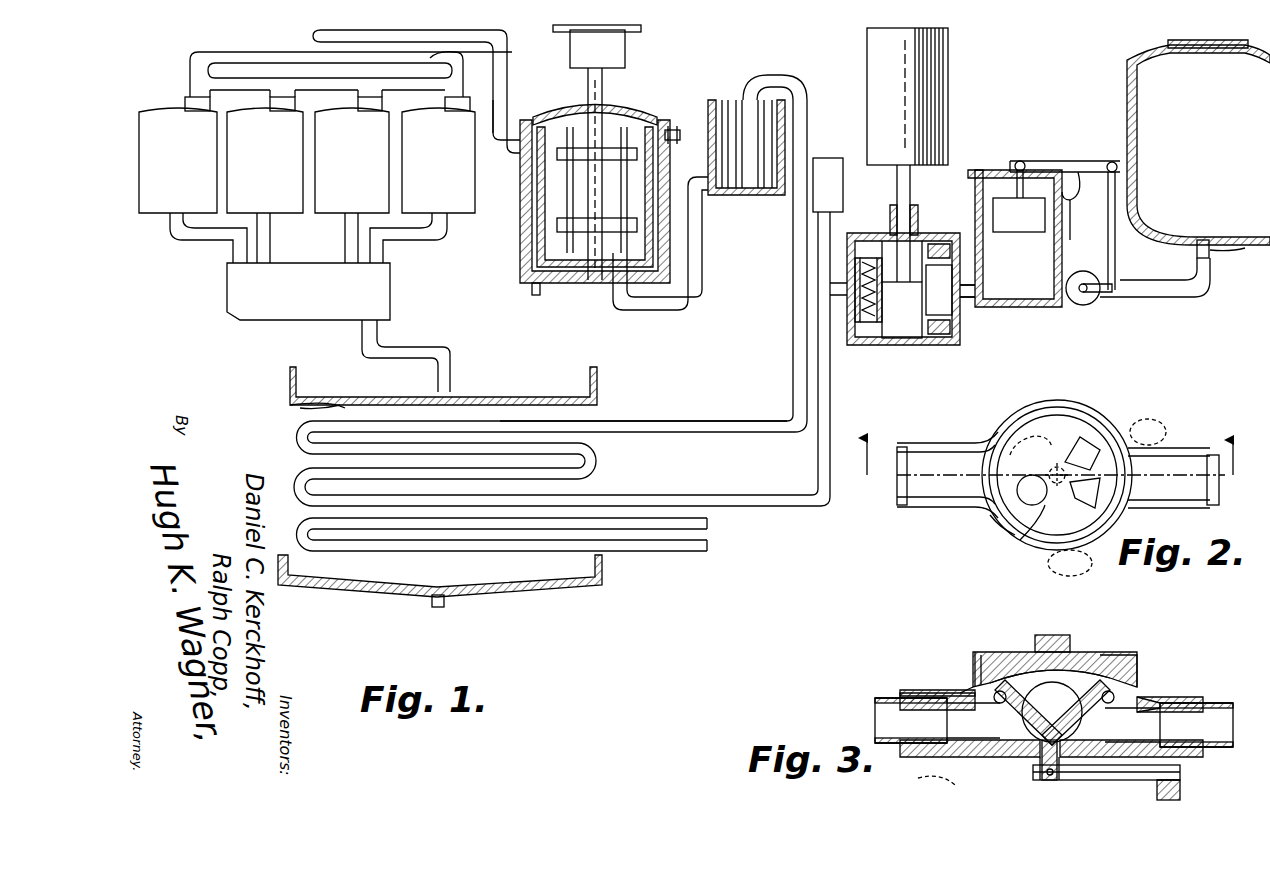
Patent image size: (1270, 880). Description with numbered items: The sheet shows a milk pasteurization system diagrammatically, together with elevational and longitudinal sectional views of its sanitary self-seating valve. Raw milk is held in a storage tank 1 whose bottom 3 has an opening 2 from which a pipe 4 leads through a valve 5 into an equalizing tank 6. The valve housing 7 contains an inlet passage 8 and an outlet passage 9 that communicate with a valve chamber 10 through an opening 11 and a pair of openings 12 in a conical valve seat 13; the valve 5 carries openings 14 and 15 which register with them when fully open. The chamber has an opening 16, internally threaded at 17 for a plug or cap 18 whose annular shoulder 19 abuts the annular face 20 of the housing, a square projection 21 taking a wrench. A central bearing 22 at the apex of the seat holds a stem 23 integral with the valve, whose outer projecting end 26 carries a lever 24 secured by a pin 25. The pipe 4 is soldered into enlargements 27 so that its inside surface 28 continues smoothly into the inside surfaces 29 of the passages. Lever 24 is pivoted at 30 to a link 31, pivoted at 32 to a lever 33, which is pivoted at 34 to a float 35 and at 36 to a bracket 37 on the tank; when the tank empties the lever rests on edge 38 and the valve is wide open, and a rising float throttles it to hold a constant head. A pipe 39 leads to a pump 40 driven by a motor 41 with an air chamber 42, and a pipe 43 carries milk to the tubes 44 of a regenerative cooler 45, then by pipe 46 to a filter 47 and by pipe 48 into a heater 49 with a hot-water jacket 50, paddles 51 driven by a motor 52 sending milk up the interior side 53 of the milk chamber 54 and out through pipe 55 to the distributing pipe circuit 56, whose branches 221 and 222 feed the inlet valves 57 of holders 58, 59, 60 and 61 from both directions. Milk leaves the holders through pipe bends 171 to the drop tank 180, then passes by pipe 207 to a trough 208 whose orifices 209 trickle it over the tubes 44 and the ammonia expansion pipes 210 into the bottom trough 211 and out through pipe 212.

In FIG. 1, the storage tank 1 is at (1130, 76).
In FIG. 1, the opening 2 is at (1205, 240).
In FIG. 1, the bottom 3 is at (1232, 248).
In FIG. 2, the bottom 3 is at (1061, 451).
In FIG. 1, the pipe 4 is at (1210, 278).
In FIG. 2, the pipe 4 is at (903, 447).
In FIG. 3, the pipe 4 is at (875, 702).
In FIG. 1, the valve 5 is at (1092, 300).
In FIG. 2, the valve 5 is at (1057, 497).
In FIG. 3, the valve 5 is at (1052, 712).
In FIG. 1, the equalizing tank 6 is at (975, 198).
In FIG. 2, the valve housing 7 is at (1005, 430).
In FIG. 3, the valve housing 7 is at (978, 680).
In FIG. 3, the inlet passage 8 is at (973, 720).
In FIG. 3, the outlet passage 9 is at (1132, 725).
In FIG. 3, the valve chamber 10 is at (1085, 660).
In FIG. 2, the inlet opening 11 is at (1031, 442).
In FIG. 3, the inlet opening 11 is at (1028, 712).
In FIG. 2, the outlet openings 12 is at (1107, 498).
In FIG. 3, the outlet openings 12 is at (1079, 712).
In FIG. 2, the valve seat 13 is at (1040, 540).
In FIG. 3, the valve seat 13 is at (995, 692).
In FIG. 2, the valve opening 14 is at (1030, 505).
In FIG. 3, the valve opening 14 is at (1050, 681).
In FIG. 2, the valve opening 15 is at (1080, 450).
In FIG. 3, the valve opening 15 is at (1102, 692).
In FIG. 3, the opening 16 is at (1150, 700).
In FIG. 2, the internal threads 17 is at (995, 528).
In FIG. 3, the internal threads 17 is at (1140, 685).
In FIG. 3, the plug or cap 18 is at (1010, 652).
In FIG. 3, the annular shoulder 19 is at (975, 655).
In FIG. 3, the annular face 20 is at (975, 680).
In FIG. 3, the square projection 21 is at (1052, 636).
In FIG. 3, the central bearing 22 is at (1040, 752).
In FIG. 3, the stem 23 is at (1040, 770).
In FIG. 3, the lever 24 is at (1130, 780).
In FIG. 3, the pin 25 is at (1050, 776).
In FIG. 3, the outer projecting end 26 is at (1030, 780).
In FIG. 3, the enlargements 27 is at (925, 692).
In FIG. 3, the inside surface 28 is at (911, 720).
In FIG. 3, the inside surfaces 29 is at (1196, 725).
In FIG. 1, the pivot 30 is at (1115, 292).
In FIG. 3, the pivot 30 is at (1182, 795).
In FIG. 1, the link 31 is at (1117, 268).
In FIG. 3, the link 31 is at (1185, 782).
In FIG. 1, the pivot 32 is at (1110, 160).
In FIG. 1, the lever 33 is at (1058, 160).
In FIG. 1, the pivot 34 is at (1020, 160).
In FIG. 1, the float 35 is at (1019, 215).
In FIG. 1, the pivot 36 is at (1082, 195).
In FIG. 1, the bracket 37 is at (1071, 220).
In FIG. 1, the edge 38 is at (1022, 165).
In FIG. 1, the pipe 39 is at (968, 300).
In FIG. 1, the pump 40 is at (900, 348).
In FIG. 1, the motor or engine 41 is at (907, 155).
In FIG. 1, the air chamber 42 is at (843, 186).
In FIG. 1, the pipe 43 is at (832, 402).
In FIG. 1, the tubes 44 is at (300, 455).
In FIG. 1, the regenerative cooler or heat exchanger 45 is at (590, 420).
In FIG. 1, the pipe 46 is at (793, 375).
In FIG. 1, the filter 47 is at (742, 100).
In FIG. 1, the pipe 48 is at (702, 270).
In FIG. 1, the heater 49 is at (672, 128).
In FIG. 1, the heater jacket 50 is at (530, 272).
In FIG. 1, the paddles 51 is at (640, 108).
In FIG. 1, the motor 52 is at (597, 152).
In FIG. 1, the interior side 53 is at (565, 222).
In FIG. 1, the milk chamber 54 is at (540, 292).
In FIG. 1, the pipe 55 is at (507, 104).
In FIG. 1, the holder-tank-distributing pipe-circuit 56 is at (288, 62).
In FIG. 1, the inlet valves 57 is at (200, 108).
In FIG. 1, the pasteurizing holder 58 is at (265, 160).
In FIG. 1, the pasteurizing holder 59 is at (178, 160).
In FIG. 1, the pasteurizing holder 60 is at (438, 160).
In FIG. 1, the pasteurizing holder 61 is at (352, 160).
In FIG. 1, the pipe bend 171 is at (200, 238).
In FIG. 1, the drop tank 180 is at (308, 291).
In FIG. 1, the pipe 207 is at (380, 335).
In FIG. 1, the trough 208 is at (532, 362).
In FIG. 1, the orifices 209 is at (305, 412).
In FIG. 1, the ammonia expansion pipes 210 is at (708, 546).
In FIG. 1, the bottom trough 211 is at (604, 580).
In FIG. 1, the pipe 212 is at (446, 600).
In FIG. 1, the branch 221 is at (222, 62).
In FIG. 1, the branch 222 is at (491, 53).